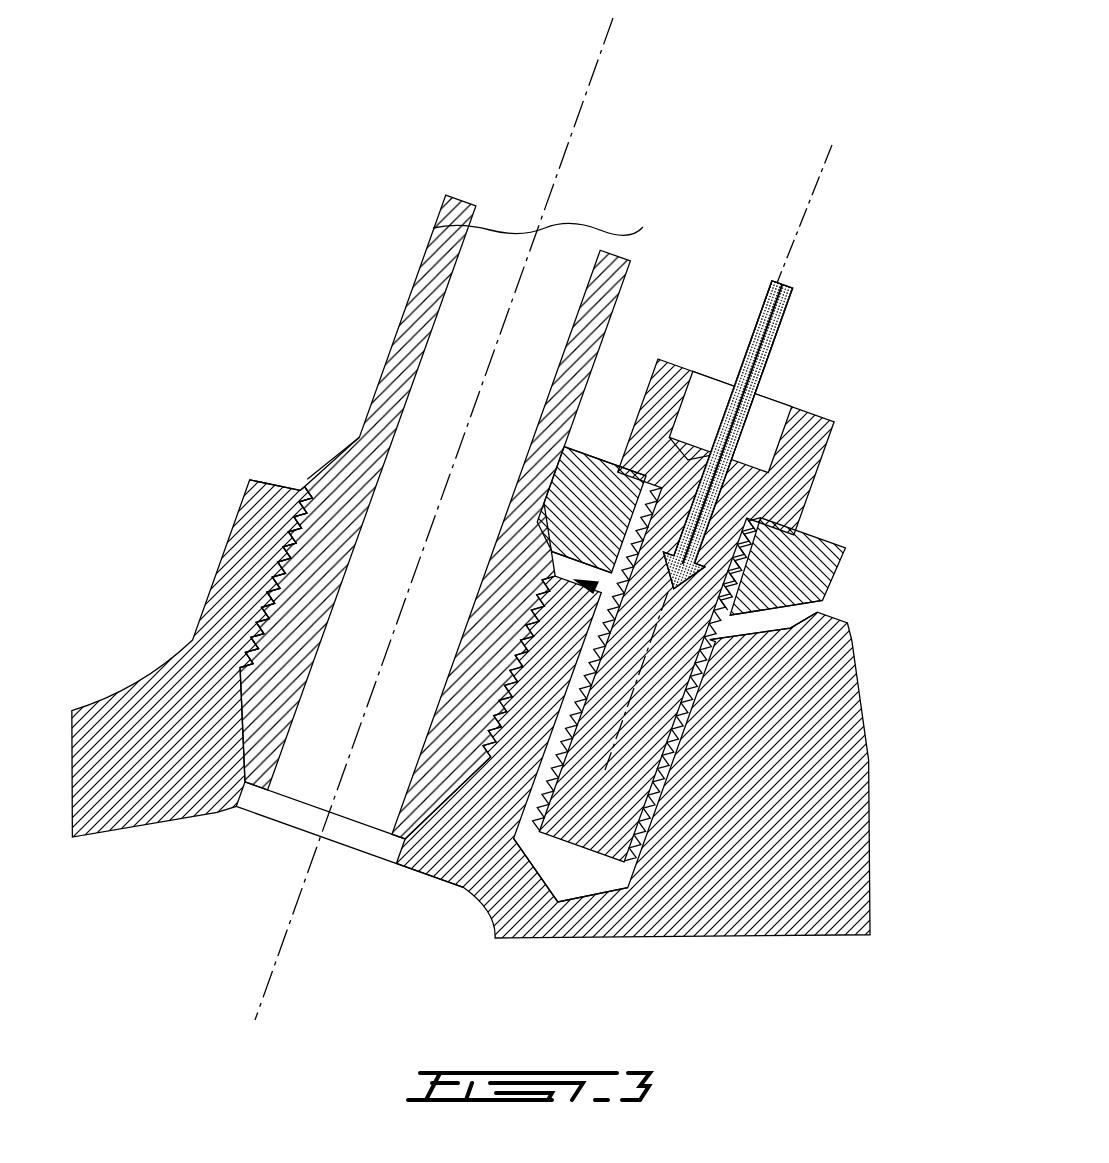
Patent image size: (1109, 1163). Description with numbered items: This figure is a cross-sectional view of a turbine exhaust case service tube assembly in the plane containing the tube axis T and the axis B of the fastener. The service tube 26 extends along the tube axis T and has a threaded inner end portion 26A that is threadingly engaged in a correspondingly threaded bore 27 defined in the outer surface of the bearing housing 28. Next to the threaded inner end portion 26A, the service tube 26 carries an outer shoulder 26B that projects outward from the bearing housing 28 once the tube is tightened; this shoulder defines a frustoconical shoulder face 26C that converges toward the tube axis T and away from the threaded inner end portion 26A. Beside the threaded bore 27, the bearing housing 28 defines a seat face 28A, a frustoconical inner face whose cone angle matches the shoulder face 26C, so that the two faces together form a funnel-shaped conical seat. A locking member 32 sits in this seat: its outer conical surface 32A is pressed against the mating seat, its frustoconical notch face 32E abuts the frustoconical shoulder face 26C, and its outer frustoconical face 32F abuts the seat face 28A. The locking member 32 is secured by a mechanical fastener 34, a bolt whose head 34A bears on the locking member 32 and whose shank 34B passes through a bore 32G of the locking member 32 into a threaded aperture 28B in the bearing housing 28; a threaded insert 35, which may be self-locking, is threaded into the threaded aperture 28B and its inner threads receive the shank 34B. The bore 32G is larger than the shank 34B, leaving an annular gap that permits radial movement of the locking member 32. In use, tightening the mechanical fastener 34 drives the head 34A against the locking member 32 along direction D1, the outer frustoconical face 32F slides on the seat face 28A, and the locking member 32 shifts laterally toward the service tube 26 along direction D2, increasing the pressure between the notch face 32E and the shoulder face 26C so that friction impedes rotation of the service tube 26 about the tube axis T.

The service tube 26 is at (643, 238).
The threaded inner end portion 26A is at (293, 637).
The outer shoulder 26B is at (332, 454).
The frustoconical shoulder face 26C is at (330, 466).
The threaded bore 27 is at (264, 550).
The bearing housing 28 is at (103, 803).
The seat face 28A is at (793, 625).
The threaded aperture 28B is at (513, 838).
The locking member 32 is at (823, 563).
The outer conical surface 32A is at (772, 651).
The frustoconical notch face 32E is at (540, 538).
The outer frustoconical face 32F is at (805, 630).
The bore 32G is at (747, 570).
The mechanical fastener 34 is at (705, 364).
The head 34A is at (825, 460).
The shank 34B is at (648, 745).
The threaded insert 35 is at (722, 748).
The tube axis T is at (598, 62).
The axis of the mechanical fastener B is at (603, 765).
The direction D1 is at (778, 322).
The direction D2 is at (576, 582).